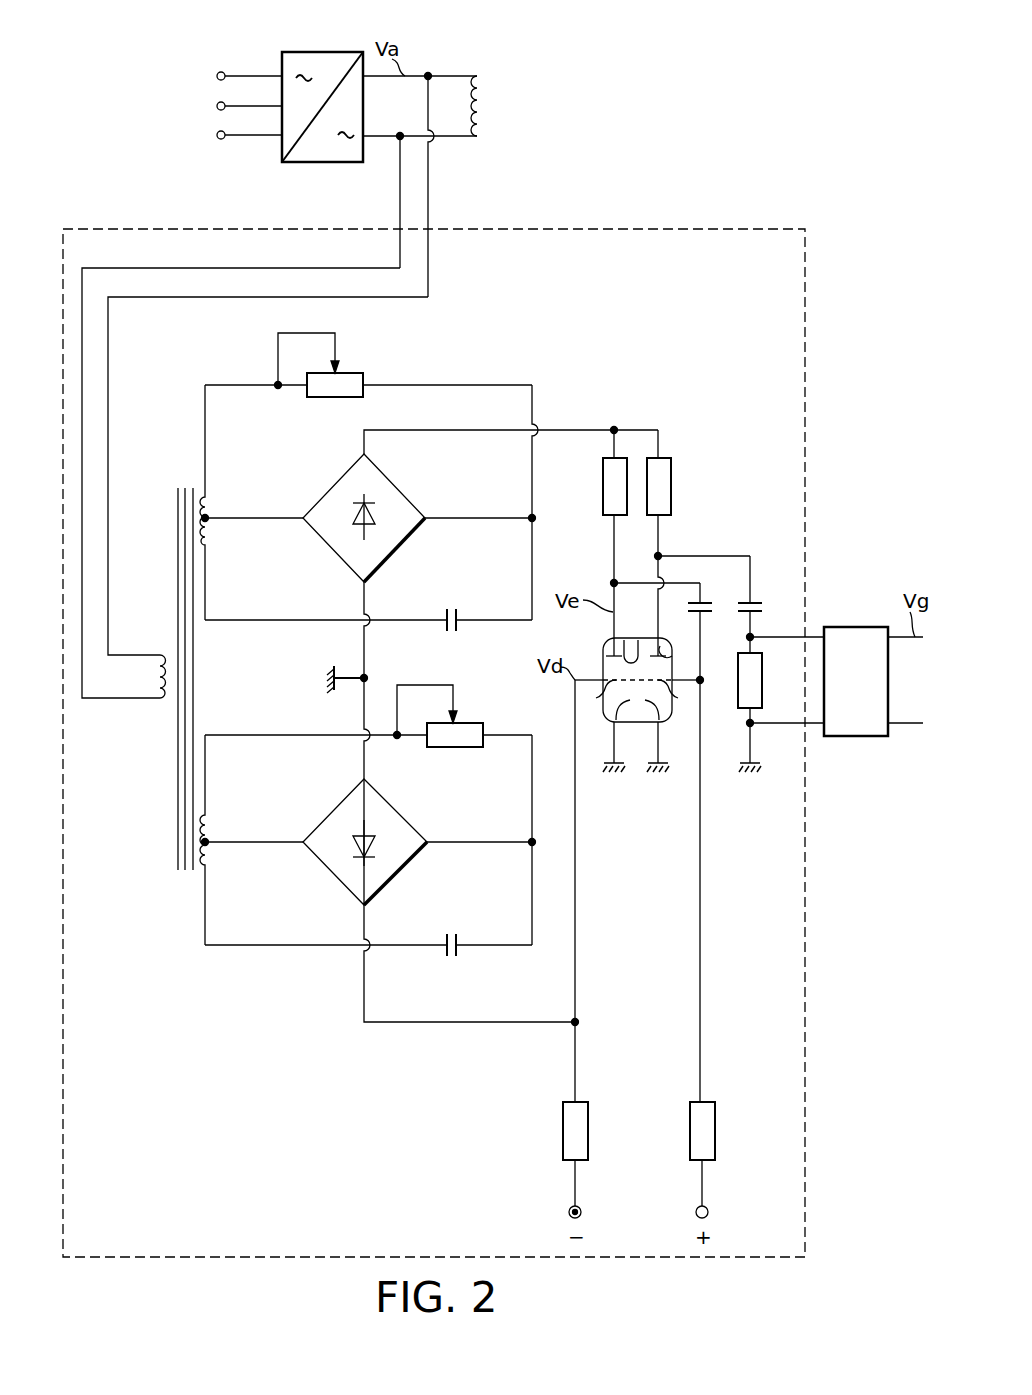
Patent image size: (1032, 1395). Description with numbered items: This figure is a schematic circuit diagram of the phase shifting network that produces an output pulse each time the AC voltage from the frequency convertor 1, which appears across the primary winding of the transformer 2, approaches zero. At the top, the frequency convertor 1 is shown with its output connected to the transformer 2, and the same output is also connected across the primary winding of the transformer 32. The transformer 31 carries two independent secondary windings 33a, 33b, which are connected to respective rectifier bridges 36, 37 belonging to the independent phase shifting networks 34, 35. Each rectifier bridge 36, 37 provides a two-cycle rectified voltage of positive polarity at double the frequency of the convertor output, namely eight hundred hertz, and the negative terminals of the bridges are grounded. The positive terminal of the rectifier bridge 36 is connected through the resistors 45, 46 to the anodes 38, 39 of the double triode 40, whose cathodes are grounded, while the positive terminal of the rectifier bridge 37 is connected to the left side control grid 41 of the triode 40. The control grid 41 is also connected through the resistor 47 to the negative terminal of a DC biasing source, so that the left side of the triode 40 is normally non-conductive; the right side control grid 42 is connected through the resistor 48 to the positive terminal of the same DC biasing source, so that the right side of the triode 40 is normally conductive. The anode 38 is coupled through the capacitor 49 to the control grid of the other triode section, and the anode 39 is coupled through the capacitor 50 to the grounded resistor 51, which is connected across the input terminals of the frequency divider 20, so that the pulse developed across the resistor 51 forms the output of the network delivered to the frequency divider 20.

The frequency convertor 1 is at (318, 52).
The transformer 2 is at (470, 76).
The frequency divider 20 is at (872, 627).
The transformer 31 is at (150, 687).
The transformer 32 is at (180, 484).
The secondary winding 33a is at (211, 502).
The secondary winding 33b is at (211, 821).
The phase shifting network 34 is at (487, 405).
The phase shifting network 35 is at (485, 917).
The rectifier bridge 36 is at (388, 482).
The rectifier bridge 37 is at (397, 812).
The anode 38 is at (632, 648).
The anode 39 is at (677, 659).
The double triode 40 is at (603, 648).
The left side control grid 41 is at (604, 701).
The right side control grid 42 is at (673, 701).
The resistor 45 is at (603, 497).
The resistor 46 is at (671, 459).
The resistor 47 is at (563, 1125).
The resistor 48 is at (690, 1122).
The capacitor 49 is at (706, 603).
The capacitor 50 is at (757, 603).
The resistor 51 is at (762, 687).